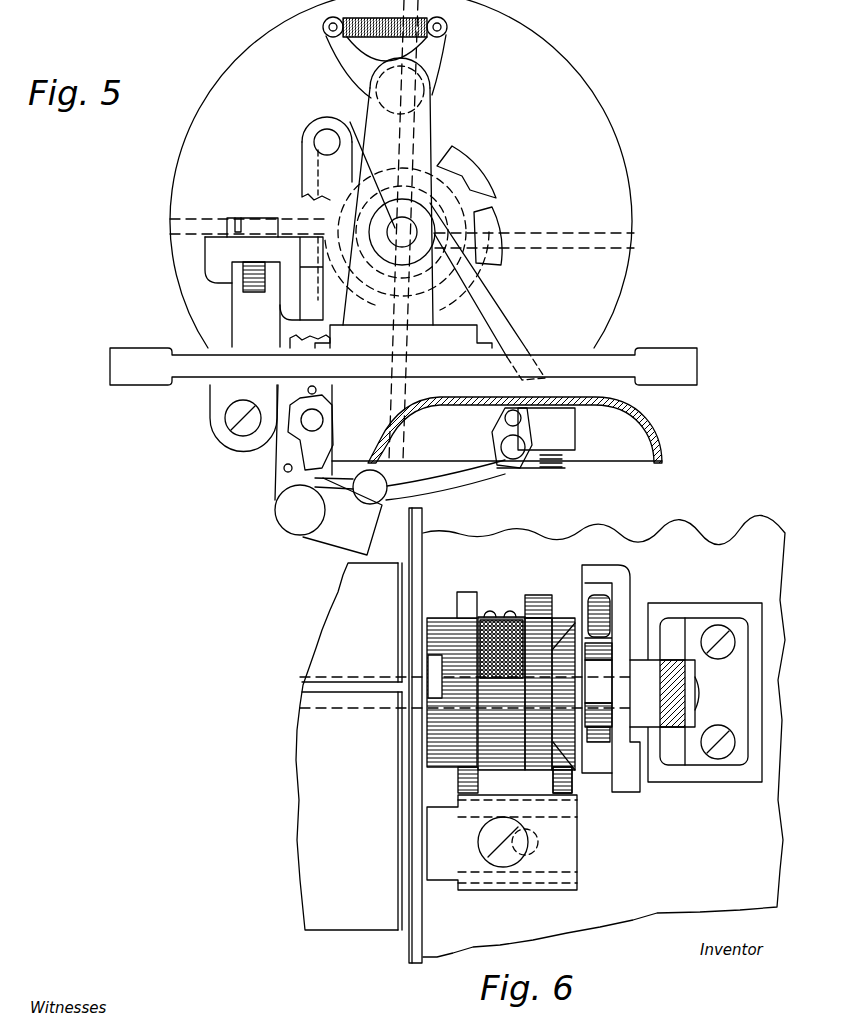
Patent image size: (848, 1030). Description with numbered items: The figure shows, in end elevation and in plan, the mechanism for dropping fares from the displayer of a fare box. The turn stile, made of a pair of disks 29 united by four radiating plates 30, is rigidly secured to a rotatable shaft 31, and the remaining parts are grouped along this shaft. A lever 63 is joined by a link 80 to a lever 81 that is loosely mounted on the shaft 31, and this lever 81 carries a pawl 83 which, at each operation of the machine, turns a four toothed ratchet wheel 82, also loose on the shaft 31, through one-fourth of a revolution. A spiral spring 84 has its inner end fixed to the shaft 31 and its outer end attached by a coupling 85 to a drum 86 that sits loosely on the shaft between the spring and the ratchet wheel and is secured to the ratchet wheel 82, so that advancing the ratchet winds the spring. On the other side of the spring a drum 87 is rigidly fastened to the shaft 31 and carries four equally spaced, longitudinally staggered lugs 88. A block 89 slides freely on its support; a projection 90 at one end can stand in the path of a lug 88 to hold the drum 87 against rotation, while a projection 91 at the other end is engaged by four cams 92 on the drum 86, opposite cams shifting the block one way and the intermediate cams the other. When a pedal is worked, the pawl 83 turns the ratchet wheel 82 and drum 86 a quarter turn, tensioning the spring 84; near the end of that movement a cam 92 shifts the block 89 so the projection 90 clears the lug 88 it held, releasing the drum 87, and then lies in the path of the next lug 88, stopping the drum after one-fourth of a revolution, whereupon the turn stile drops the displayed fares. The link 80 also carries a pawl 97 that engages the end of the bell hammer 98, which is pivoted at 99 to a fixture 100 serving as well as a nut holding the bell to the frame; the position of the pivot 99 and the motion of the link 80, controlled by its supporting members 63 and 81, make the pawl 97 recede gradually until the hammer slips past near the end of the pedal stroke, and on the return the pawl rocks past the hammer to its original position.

In FIG. 6, the disks 29 is at (403, 903).
In FIG. 6, the radiating plates 30 is at (320, 857).
In FIG. 5, the rotatable shaft 31 is at (405, 231).
In FIG. 6, the rotatable shaft 31 is at (697, 688).
In FIG. 5, the lever 63 is at (357, 547).
In FIG. 5, the link 80 is at (283, 447).
In FIG. 5, the lever 81 is at (338, 178).
In FIG. 6, the lever 81 is at (623, 590).
In FIG. 5, the four toothed ratchet wheel 82 is at (490, 192).
In FIG. 6, the four toothed ratchet wheel 82 is at (597, 760).
In FIG. 5, the pawl 83 is at (493, 265).
In FIG. 6, the spiral spring 84 is at (500, 612).
In FIG. 6, the coupling 85 is at (522, 612).
In FIG. 6, the drum 86 is at (575, 640).
In FIG. 6, the drum 87 is at (438, 637).
In FIG. 5, the projecting lugs 88 is at (433, 140).
In FIG. 6, the projecting lugs 88 is at (452, 690).
In FIG. 6, the block 89 is at (562, 858).
In FIG. 6, the projection 90 is at (480, 782).
In FIG. 5, the projection 91 is at (264, 282).
In FIG. 6, the projection 91 is at (573, 790).
In FIG. 5, the cams 92 is at (478, 170).
In FIG. 6, the cams 92 is at (557, 640).
In FIG. 5, the pawl 97 is at (320, 452).
In FIG. 5, the bell hammer 98 is at (338, 507).
In FIG. 5, the pivot 99 is at (527, 440).
In FIG. 5, the fixture 100 is at (568, 435).